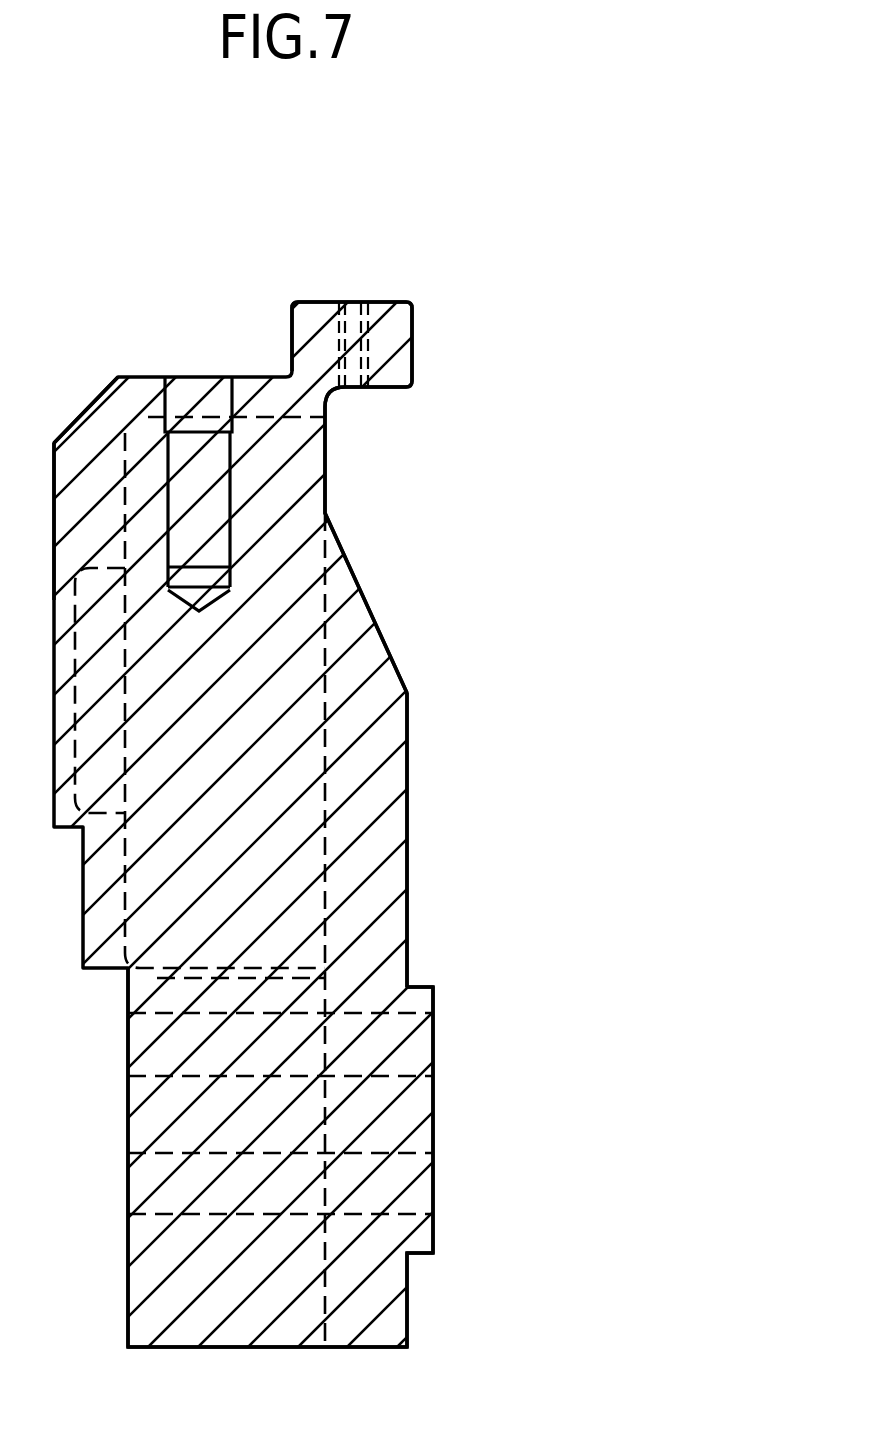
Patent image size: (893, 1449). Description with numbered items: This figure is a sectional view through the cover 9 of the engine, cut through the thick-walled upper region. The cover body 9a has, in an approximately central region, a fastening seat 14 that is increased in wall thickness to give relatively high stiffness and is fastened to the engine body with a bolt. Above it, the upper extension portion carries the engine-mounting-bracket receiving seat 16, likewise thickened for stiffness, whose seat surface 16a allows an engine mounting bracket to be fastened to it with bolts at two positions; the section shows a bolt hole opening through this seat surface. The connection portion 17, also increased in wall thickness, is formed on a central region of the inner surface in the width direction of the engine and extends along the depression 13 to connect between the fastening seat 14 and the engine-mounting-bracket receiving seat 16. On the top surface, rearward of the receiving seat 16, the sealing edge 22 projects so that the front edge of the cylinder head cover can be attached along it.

The depression 13 is at (287, 786).
The fastening seat 14 is at (425, 1107).
The engine-mounting-bracket receiving seat 16 is at (143, 402).
The seat surface 16a is at (212, 377).
The connection portion 17 is at (387, 877).
The sealing edge 22 is at (378, 300).
The cover body 9a is at (405, 535).
The cover 9 is at (466, 540).